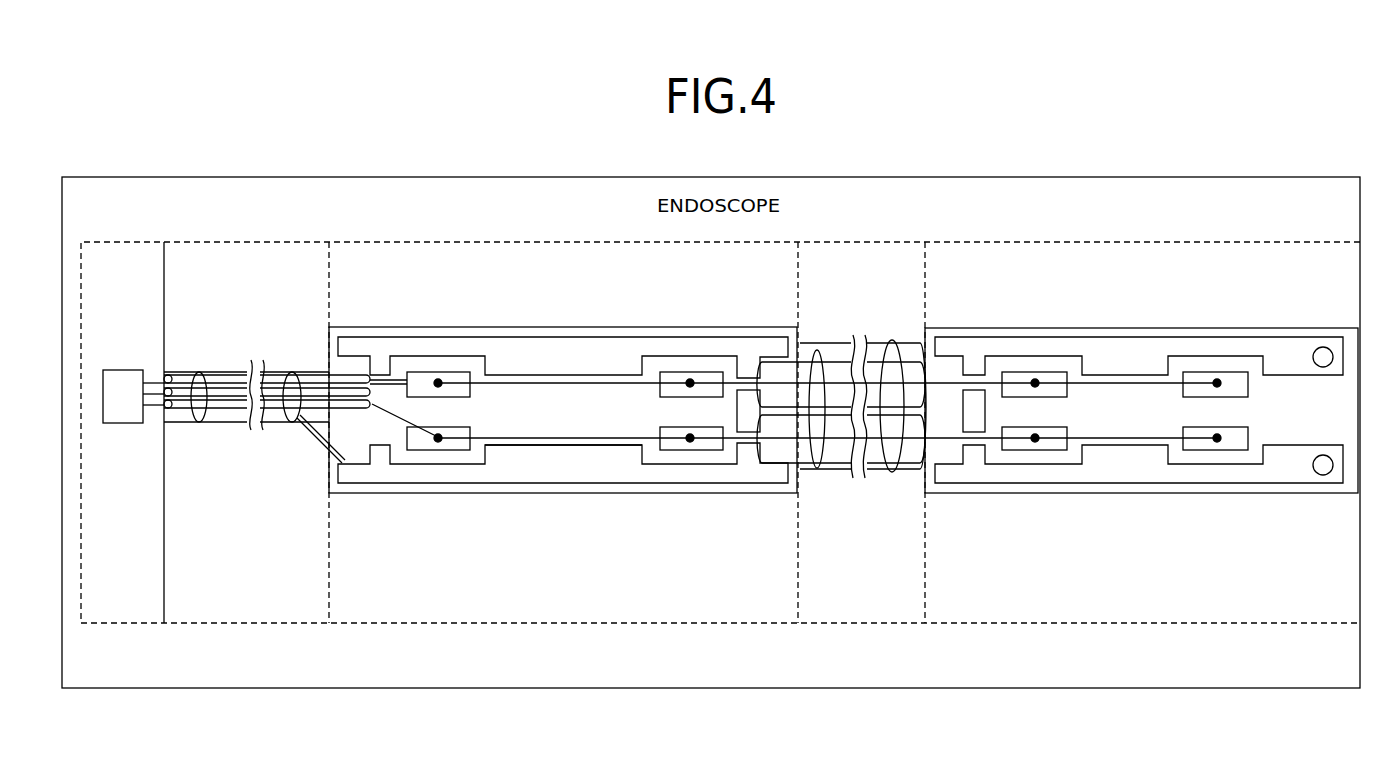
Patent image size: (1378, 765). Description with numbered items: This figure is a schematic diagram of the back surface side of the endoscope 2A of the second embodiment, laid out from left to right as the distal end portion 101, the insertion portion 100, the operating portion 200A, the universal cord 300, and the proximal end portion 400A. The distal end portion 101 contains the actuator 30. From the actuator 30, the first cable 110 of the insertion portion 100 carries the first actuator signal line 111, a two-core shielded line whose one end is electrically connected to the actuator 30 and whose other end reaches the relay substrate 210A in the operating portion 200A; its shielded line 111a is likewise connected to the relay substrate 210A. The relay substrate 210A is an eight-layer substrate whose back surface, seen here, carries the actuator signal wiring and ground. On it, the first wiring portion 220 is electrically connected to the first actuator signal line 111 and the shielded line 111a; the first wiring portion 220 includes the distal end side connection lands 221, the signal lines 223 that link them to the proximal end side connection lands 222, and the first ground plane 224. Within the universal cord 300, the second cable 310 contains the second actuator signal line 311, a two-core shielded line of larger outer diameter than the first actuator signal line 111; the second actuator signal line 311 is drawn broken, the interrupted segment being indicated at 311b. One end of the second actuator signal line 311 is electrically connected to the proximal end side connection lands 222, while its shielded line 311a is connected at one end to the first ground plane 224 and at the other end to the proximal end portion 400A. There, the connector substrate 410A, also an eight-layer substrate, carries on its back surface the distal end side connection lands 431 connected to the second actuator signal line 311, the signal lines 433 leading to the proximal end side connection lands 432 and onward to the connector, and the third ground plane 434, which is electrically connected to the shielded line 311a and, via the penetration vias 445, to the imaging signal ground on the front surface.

The endoscope 2A is at (1115, 177).
The distal end portion 101 is at (124, 242).
The insertion portion 100 is at (249, 242).
The operating portion 200A is at (561, 242).
The universal cord 300 is at (864, 242).
The proximal end portion 400A is at (1183, 242).
The relay substrate 210A is at (492, 326).
The first wiring portion 220 is at (637, 484).
The first ground plane 224 is at (562, 456).
The distal end side connection lands 221 is at (471, 386).
The signal lines 223 is at (594, 386).
The proximal end side connection lands 222 is at (657, 386).
The actuator 30 is at (124, 370).
The first cable 110 is at (287, 372).
The first actuator signal line 111 is at (212, 372).
The shielded line 111a is at (311, 445).
The second cable 310 is at (898, 340).
The second actuator signal line 311 is at (823, 350).
The shielded line 311a is at (802, 470).
The cord break section 311b is at (898, 476).
The connector substrate 410A is at (1021, 326).
The third ground plane 434 is at (1135, 458).
The penetration vias 445 is at (1323, 476).
The distal end side connection lands 431 is at (1068, 386).
The signal lines 433 is at (1145, 386).
The proximal end side connection lands 432 is at (1250, 386).